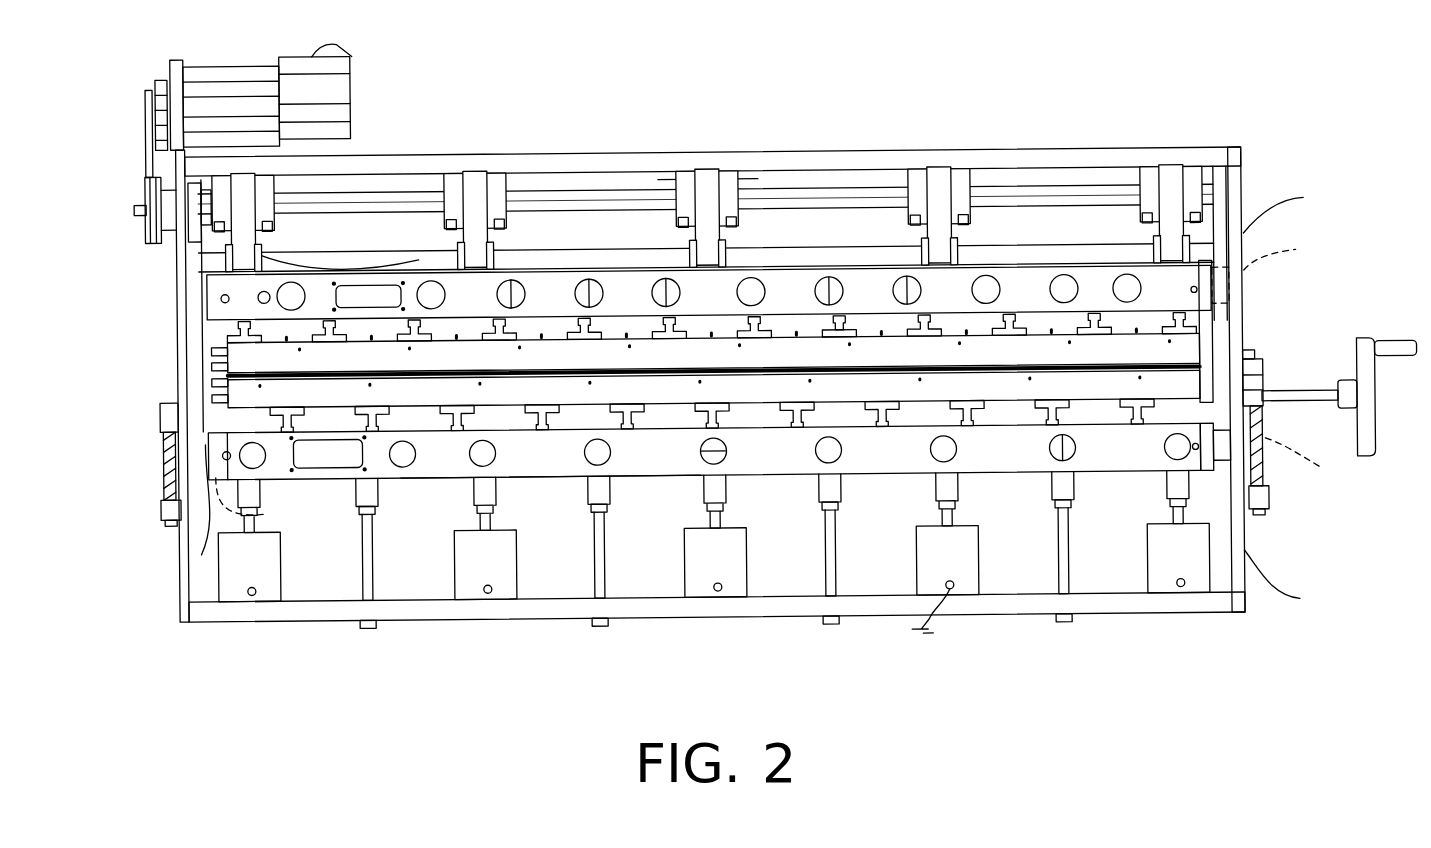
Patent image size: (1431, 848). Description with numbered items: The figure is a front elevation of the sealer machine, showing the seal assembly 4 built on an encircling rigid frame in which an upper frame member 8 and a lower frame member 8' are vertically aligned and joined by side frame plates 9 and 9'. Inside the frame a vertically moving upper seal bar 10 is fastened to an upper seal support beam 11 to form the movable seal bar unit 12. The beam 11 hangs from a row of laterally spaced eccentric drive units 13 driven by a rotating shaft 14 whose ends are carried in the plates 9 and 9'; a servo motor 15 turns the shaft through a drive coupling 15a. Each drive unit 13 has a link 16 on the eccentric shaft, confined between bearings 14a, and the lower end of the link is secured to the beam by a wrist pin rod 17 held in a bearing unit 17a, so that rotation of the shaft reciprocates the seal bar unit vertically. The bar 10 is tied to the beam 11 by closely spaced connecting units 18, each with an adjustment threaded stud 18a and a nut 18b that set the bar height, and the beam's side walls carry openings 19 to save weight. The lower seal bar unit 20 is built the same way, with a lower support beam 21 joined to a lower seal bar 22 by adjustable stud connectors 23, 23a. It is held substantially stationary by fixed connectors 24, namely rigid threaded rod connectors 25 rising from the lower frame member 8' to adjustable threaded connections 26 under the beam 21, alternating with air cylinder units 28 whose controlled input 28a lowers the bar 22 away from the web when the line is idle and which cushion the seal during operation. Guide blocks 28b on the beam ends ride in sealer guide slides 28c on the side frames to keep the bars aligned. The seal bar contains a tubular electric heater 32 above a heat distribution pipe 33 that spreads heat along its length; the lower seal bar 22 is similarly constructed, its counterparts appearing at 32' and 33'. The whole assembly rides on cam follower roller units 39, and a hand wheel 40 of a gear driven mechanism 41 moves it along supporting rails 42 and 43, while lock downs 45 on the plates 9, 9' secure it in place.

The seal assembly 4 is at (1122, 158).
The upper frame member 8 is at (705, 140).
The lower frame member 8' is at (717, 635).
The side frame plate 9 is at (161, 386).
The side frame plate 9' is at (1279, 379).
The upper seal bar 10 is at (407, 369).
The upper seal support beam 11 is at (463, 315).
The movable seal bar unit 12 is at (238, 326).
The eccentric drive unit 13 is at (482, 172).
The rotating shaft 14 is at (405, 195).
The bearings 14a is at (700, 176).
The servo motor 15 is at (360, 100).
The drive coupling 15a is at (148, 185).
The link 16 is at (722, 193).
The wrist pin rod 17 is at (578, 252).
The bearing unit 17a is at (318, 260).
The connecting unit 18 is at (585, 340).
The adjustment threaded stud 18a is at (852, 341).
The nut 18b is at (850, 323).
The openings 19 is at (653, 297).
The lower seal bar unit 20 is at (222, 437).
The lower support beam 21 is at (530, 482).
The lower seal bar 22 is at (700, 433).
The adjustable stud connector 23 is at (540, 408).
The lower clamp nut 23a is at (974, 436).
The fixed connector 24 is at (288, 566).
The rigid threaded rod connector 25 is at (604, 564).
The adjustable threaded connection 26 is at (376, 512).
The air cylinder unit 28 is at (237, 560).
The controlled input 28a is at (250, 597).
The guide block 28b is at (788, 381).
The sealer guide slide 28c is at (195, 549).
The tubular electric heater 32 is at (164, 334).
The stop block 32' is at (164, 393).
The heat distribution pipe 33 is at (164, 352).
The stop block 33' is at (164, 372).
The cam follower roller unit 39 is at (160, 411).
The hand wheel 40 is at (1370, 412).
The gear driven mechanism 41 is at (1265, 420).
The supporting rail 42 is at (163, 482).
The supporting rail 43 is at (1268, 472).
The lock down 45 is at (165, 517).